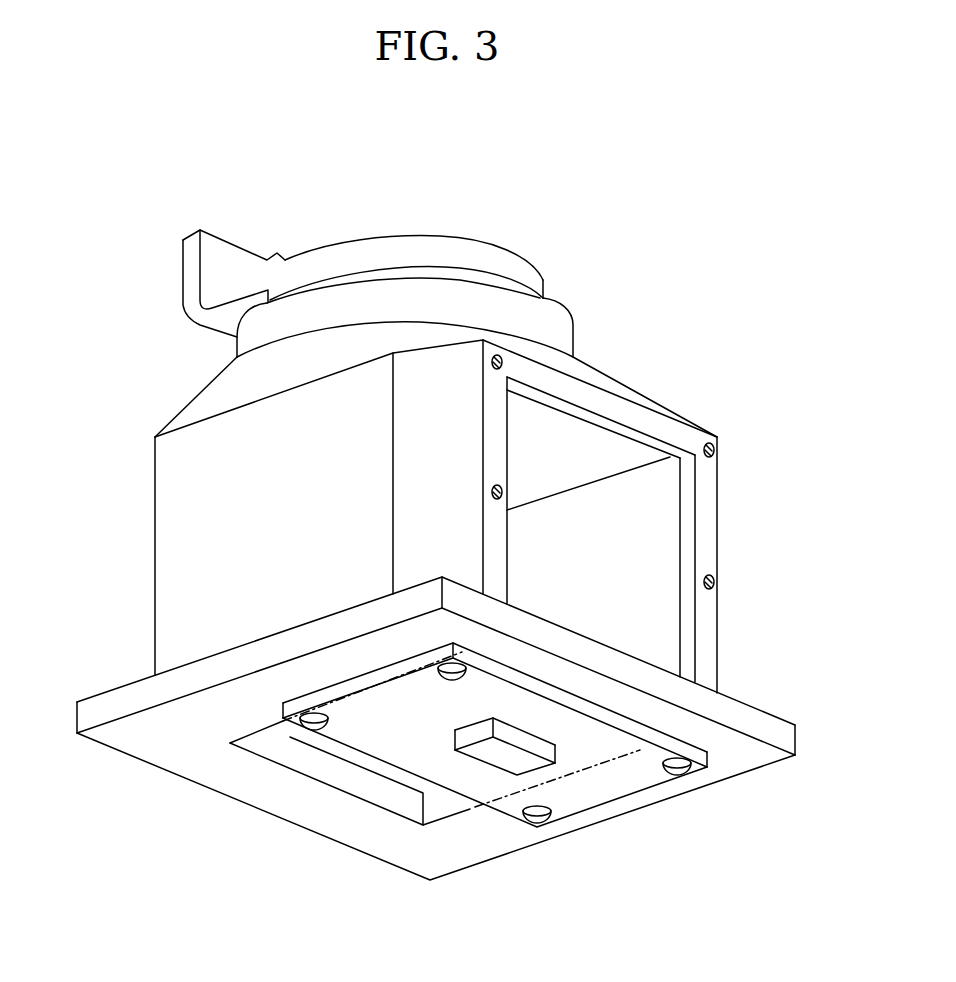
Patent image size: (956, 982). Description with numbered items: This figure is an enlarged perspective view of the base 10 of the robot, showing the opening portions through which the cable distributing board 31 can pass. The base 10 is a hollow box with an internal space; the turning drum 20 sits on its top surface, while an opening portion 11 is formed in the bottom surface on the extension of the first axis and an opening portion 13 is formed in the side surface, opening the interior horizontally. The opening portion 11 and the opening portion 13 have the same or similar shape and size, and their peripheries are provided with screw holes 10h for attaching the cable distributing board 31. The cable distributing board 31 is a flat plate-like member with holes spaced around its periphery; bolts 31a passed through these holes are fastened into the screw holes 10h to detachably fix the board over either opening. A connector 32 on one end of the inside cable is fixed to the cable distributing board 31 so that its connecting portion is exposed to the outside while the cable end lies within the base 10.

The base 10 is at (153, 492).
The screw holes 10h is at (497, 356).
The opening portion 11 is at (288, 757).
The opening portion 13 is at (688, 645).
The turning drum 20 is at (554, 291).
The cable distributing board 31 is at (397, 768).
The bolts 31a is at (298, 730).
The connector 32 is at (480, 763).